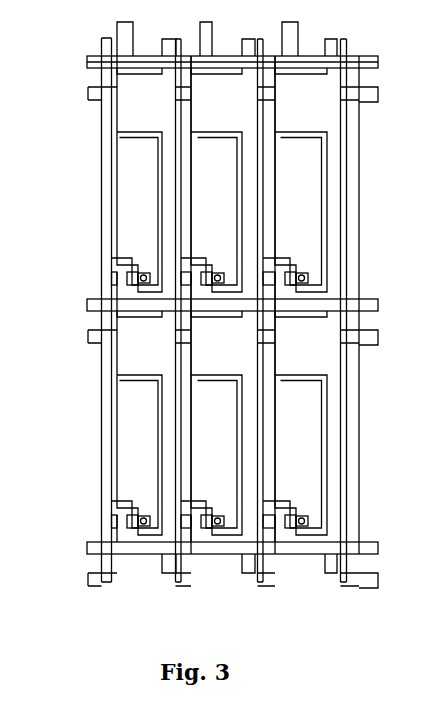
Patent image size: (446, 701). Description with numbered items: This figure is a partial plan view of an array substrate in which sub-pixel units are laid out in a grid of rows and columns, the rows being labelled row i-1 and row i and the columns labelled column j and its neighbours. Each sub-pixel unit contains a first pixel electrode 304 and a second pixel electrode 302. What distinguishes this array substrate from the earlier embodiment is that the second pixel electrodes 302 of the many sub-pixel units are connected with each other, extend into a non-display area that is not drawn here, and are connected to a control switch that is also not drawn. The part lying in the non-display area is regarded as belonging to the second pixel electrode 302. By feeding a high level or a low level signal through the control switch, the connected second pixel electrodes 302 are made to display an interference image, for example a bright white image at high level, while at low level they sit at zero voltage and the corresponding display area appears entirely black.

The second pixel electrode 302 is at (140, 95).
The first pixel electrode 304 is at (140, 222).
The scan line row i-1 is at (210, 64).
The scan line row i is at (213, 308).
The data line column j is at (105, 328).